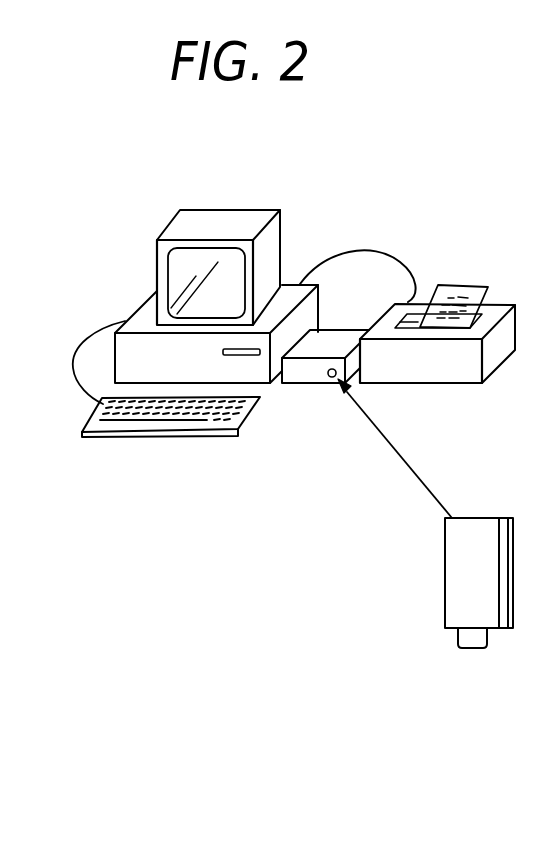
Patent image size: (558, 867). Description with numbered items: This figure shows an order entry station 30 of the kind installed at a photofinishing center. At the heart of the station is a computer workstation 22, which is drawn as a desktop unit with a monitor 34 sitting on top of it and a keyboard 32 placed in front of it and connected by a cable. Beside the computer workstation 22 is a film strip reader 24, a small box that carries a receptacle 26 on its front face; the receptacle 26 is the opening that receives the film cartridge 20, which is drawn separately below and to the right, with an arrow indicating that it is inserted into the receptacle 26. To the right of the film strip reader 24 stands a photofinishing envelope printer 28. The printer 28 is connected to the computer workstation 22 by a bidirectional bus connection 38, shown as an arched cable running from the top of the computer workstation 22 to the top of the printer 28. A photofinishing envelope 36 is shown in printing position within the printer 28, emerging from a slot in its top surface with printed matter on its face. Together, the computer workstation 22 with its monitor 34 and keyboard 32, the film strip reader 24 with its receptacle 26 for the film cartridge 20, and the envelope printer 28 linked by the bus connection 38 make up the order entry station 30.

The film cartridge 20 is at (458, 563).
The computer workstation 22 is at (145, 305).
The film strip reader 24 is at (332, 345).
The receptacle 26 is at (327, 378).
The photofinishing envelope printer 28 is at (450, 372).
The order entry station 30 is at (373, 185).
The keyboard 32 is at (130, 435).
The monitor 34 is at (180, 261).
The photofinishing envelope 36 is at (468, 282).
The bidirectional bus connection 38 is at (397, 253).